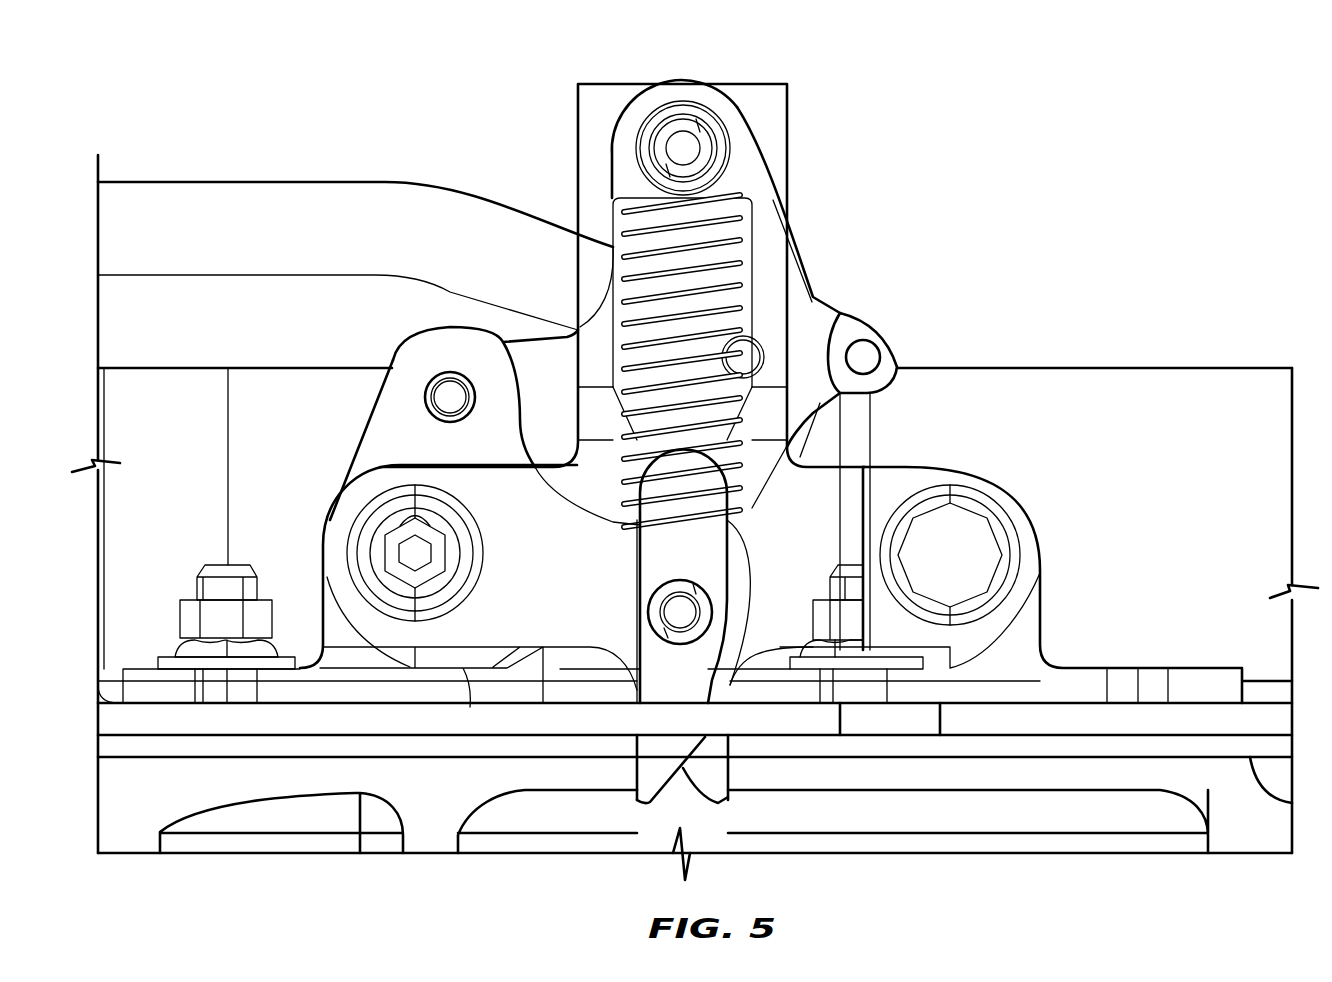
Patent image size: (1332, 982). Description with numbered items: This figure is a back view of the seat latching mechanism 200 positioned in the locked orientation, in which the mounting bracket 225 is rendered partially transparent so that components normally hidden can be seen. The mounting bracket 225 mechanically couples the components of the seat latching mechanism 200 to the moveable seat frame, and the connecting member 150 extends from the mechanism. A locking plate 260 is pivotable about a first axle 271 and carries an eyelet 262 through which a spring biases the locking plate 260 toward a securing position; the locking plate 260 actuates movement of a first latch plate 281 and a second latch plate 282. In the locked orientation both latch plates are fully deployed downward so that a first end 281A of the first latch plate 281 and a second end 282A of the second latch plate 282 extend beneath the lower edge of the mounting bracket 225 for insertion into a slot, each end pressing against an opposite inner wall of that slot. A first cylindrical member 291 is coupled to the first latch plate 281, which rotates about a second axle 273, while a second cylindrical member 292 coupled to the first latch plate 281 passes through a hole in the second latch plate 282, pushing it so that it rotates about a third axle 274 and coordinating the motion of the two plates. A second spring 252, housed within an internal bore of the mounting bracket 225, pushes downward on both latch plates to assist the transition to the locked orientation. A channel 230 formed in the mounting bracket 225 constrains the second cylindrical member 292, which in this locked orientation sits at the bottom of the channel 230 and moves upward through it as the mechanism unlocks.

The seat latching mechanism 200 is at (155, 70).
The connecting member 150 is at (297, 205).
The first axle 271 is at (683, 148).
The locking plate 260 is at (797, 320).
The eyelet 262 is at (910, 347).
The first cylindrical member 291 is at (450, 397).
The second spring 252 is at (713, 490).
The second axle 273 is at (410, 553).
The third axle 274 is at (965, 540).
The channel 230 is at (660, 556).
The mounting bracket 225 is at (1098, 690).
The second cylindrical member 292 is at (673, 612).
The first end of first latch plate 281A is at (627, 772).
The second end of second latch plate 282A is at (732, 775).
The first latch plate 281 is at (637, 800).
The second latch plate 282 is at (718, 800).